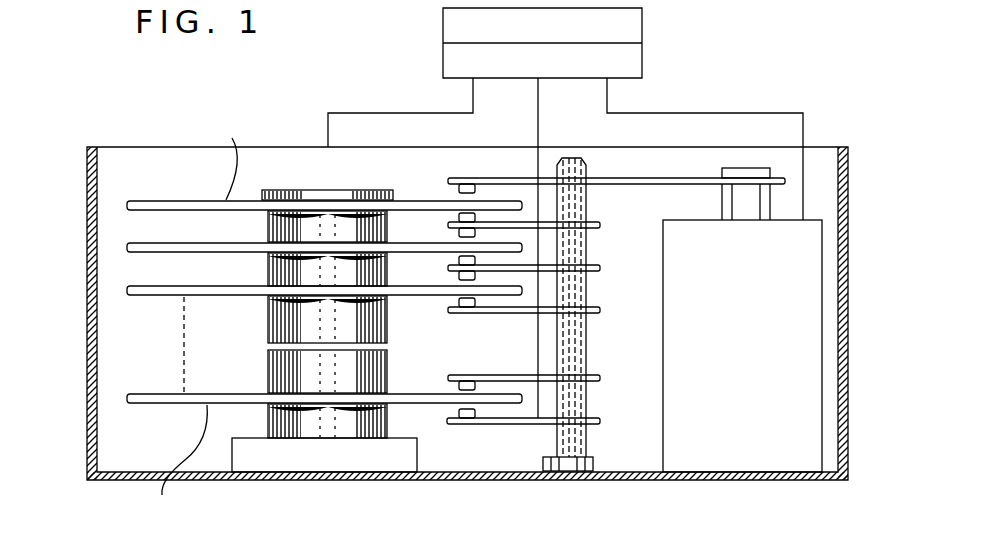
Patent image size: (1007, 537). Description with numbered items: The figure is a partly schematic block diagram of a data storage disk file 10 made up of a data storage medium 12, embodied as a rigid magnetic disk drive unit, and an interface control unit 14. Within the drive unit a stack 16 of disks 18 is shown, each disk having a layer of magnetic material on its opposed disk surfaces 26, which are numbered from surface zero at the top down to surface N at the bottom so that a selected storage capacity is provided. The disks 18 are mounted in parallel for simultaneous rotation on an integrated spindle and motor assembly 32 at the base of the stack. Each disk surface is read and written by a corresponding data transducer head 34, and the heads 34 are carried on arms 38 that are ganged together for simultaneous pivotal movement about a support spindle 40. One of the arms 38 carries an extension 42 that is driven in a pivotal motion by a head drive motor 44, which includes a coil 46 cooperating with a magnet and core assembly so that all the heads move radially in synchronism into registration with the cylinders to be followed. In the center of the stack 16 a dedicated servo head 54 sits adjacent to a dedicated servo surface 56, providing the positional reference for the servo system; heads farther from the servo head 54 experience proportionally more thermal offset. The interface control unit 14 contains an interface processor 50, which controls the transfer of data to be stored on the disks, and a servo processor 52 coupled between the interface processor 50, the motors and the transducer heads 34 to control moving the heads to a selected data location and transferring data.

The data storage disk file 10 is at (110, 62).
The data storage medium 12 is at (307, 120).
The interface control unit 14 is at (410, 63).
The stack 16 is at (156, 135).
The disks 18 is at (125, 205).
The disk surfaces 26 is at (155, 200).
The integrated spindle and motor assembly 32 is at (338, 460).
The data transducer heads 34 is at (458, 188).
The arms 38 is at (616, 186).
The support spindle 40 is at (585, 432).
The extension 42 is at (660, 178).
The head drive motor 44 is at (805, 337).
The coil 46 is at (742, 195).
The interface processor 50 is at (643, 20).
The servo processor 52 is at (643, 52).
The dedicated servo head 54 is at (458, 308).
The dedicated servo surface 56 is at (214, 297).